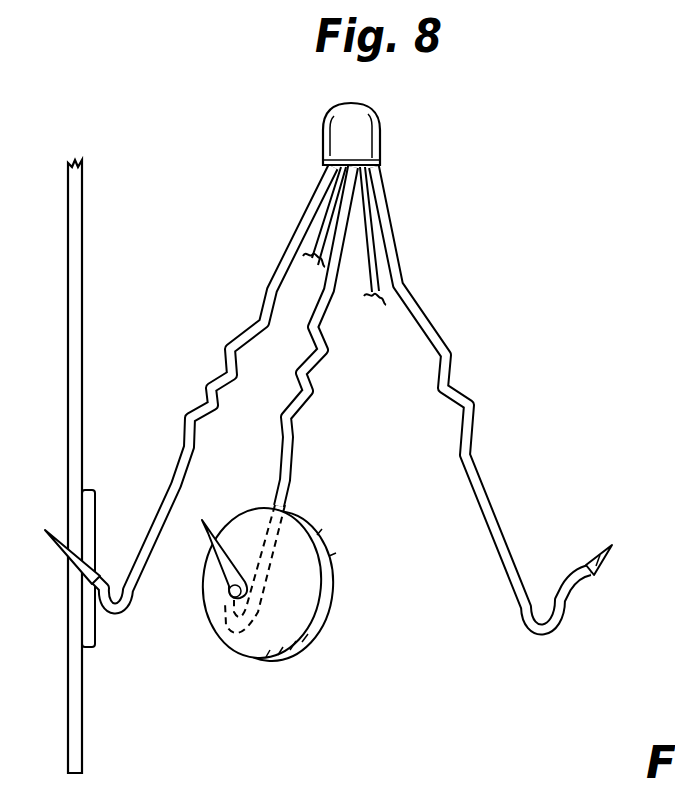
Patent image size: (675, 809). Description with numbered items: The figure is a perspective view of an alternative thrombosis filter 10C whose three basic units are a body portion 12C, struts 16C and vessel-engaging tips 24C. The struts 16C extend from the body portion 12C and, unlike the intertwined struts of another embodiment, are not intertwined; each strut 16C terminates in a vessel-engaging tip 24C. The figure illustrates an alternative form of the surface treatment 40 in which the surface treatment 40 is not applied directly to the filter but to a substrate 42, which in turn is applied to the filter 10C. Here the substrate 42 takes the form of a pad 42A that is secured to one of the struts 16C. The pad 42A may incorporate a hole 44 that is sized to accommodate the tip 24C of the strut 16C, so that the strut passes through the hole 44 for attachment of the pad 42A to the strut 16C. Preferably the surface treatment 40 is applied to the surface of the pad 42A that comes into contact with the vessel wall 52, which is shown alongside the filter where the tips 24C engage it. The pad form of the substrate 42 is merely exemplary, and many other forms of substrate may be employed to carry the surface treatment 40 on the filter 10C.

The thrombosis filter 10C is at (355, 387).
The body portion 12C is at (360, 143).
The struts 16C is at (483, 486).
The vessel-engaging tips 24C is at (600, 574).
The surface treatment 40 is at (306, 603).
The substrate 42 is at (95, 492).
The pad 42A is at (333, 557).
The hole 44 is at (230, 593).
The vessel wall 52 is at (75, 226).